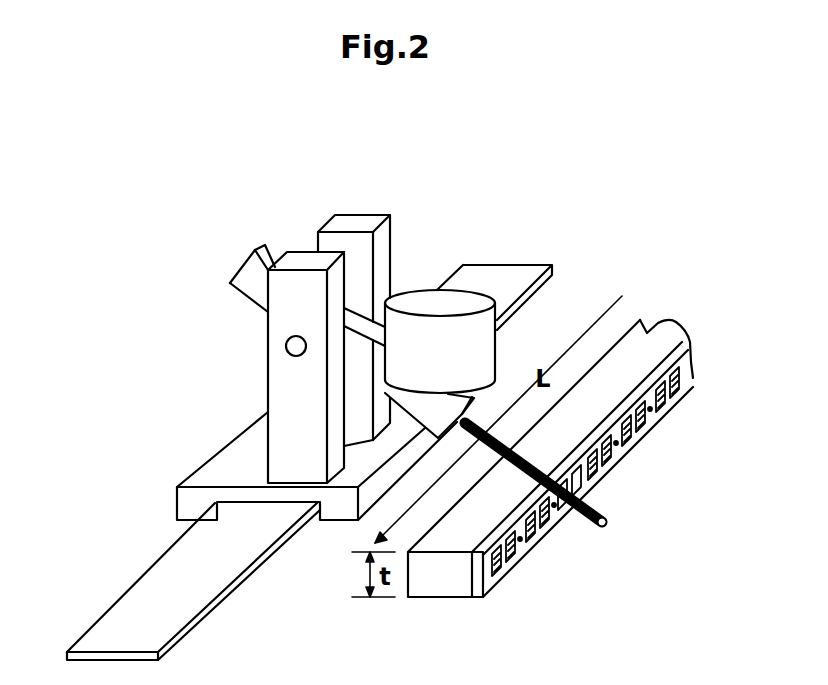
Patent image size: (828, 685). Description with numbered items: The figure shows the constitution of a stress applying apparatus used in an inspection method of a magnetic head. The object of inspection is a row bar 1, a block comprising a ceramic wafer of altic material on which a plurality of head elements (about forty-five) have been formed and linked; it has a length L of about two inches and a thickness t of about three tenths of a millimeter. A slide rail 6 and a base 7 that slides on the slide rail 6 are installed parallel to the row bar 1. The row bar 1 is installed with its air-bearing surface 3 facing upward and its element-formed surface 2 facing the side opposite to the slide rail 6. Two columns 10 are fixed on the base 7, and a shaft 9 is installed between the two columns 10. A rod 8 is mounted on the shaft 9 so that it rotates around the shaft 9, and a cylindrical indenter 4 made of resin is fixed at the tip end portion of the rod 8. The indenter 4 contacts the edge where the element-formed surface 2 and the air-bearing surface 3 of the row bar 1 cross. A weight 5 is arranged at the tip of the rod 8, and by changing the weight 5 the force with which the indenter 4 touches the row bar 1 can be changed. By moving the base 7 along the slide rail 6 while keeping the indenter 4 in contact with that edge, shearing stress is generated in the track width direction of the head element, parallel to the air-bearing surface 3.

The row bar 1 is at (442, 590).
The element-formed surface 2 is at (515, 555).
The air-bearing surface 3 is at (645, 333).
The indenter 4 is at (610, 510).
The weight 5 is at (460, 300).
The slide rail 6 is at (137, 605).
The base 7 is at (217, 475).
The rod 8 is at (242, 268).
The shaft 9 is at (287, 344).
The columns 10 is at (357, 218).